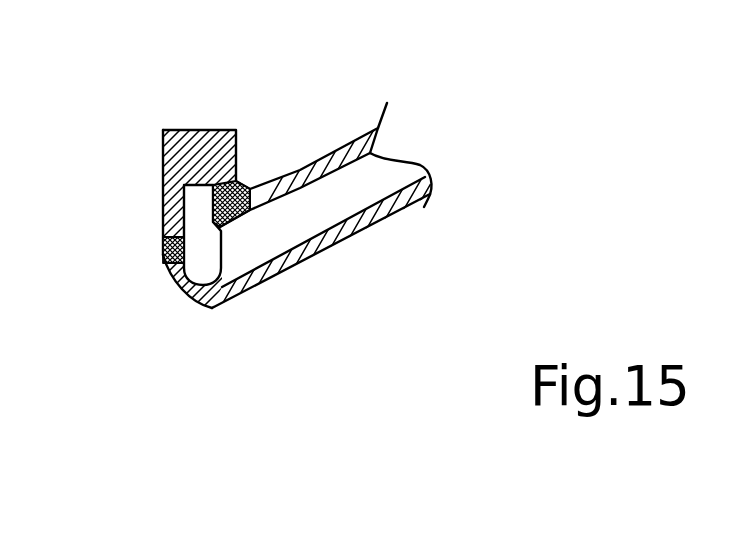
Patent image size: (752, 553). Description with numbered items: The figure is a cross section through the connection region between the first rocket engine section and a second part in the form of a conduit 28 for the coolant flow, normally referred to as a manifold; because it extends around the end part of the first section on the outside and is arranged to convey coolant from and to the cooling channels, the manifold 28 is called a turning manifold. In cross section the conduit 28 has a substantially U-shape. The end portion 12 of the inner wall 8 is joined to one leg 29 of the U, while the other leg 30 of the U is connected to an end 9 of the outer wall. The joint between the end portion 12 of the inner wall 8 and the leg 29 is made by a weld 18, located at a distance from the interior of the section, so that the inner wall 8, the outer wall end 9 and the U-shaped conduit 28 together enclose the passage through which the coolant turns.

The conduit 28 is at (163, 168).
The leg of the U 29 is at (163, 195).
The other leg of the U 30 is at (240, 187).
The weld 18 is at (165, 255).
The end portion of the inner wall 12 is at (174, 290).
The end of the outer wall 9 is at (322, 156).
The inner wall 8 is at (333, 236).